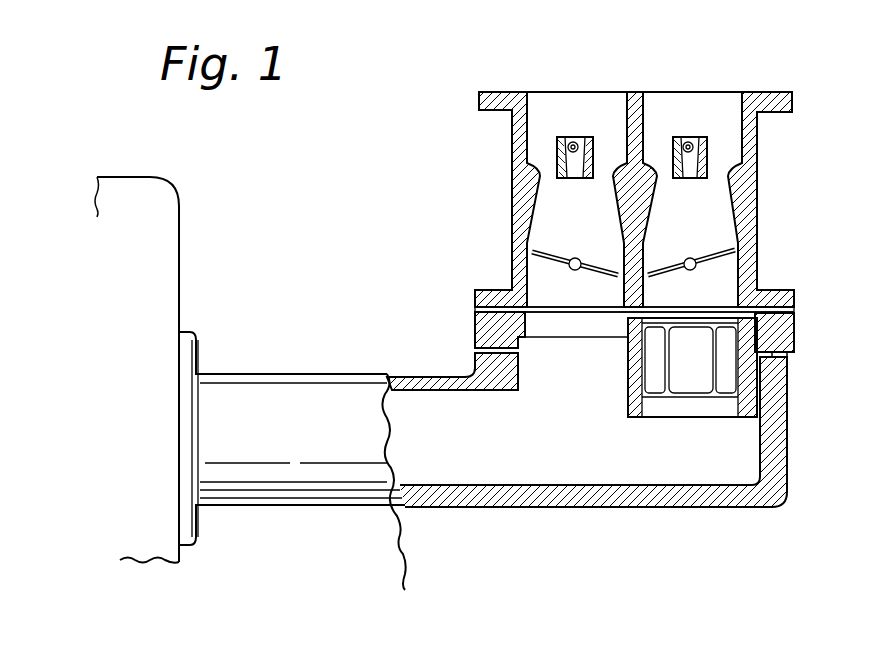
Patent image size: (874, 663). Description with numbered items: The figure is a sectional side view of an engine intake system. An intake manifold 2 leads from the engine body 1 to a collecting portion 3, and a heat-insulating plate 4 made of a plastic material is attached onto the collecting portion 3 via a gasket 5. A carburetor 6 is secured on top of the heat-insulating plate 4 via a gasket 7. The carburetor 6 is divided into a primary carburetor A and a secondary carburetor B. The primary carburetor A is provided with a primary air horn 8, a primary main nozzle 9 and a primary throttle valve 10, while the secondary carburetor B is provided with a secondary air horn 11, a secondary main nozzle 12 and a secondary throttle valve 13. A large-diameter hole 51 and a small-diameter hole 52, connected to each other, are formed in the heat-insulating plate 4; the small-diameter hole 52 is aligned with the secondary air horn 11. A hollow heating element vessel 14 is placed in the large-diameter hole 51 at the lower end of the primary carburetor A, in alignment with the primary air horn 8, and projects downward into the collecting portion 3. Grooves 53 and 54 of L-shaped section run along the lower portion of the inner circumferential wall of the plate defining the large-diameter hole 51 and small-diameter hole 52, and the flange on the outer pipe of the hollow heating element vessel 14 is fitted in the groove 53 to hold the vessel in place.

The engine body 1 is at (181, 228).
The intake manifold 2 is at (303, 490).
The collecting portion 3 is at (660, 472).
The heat-insulating plate 4 is at (794, 332).
The gasket 5 is at (789, 358).
The carburetor 6 is at (757, 186).
The gasket 7 is at (799, 307).
The primary air horn 8 is at (697, 227).
The primary main nozzle 9 is at (688, 142).
The primary throttle valve 10 is at (735, 250).
The secondary air horn 11 is at (585, 225).
The secondary main nozzle 12 is at (571, 142).
The secondary throttle valve 13 is at (555, 252).
The hollow heating element vessel 14 is at (625, 396).
The large-diameter hole 51 is at (722, 307).
The small-diameter hole 52 is at (530, 323).
The groove 53 is at (753, 385).
The groove 54 is at (520, 337).
The primary carburetor A is at (680, 92).
The secondary carburetor B is at (586, 92).